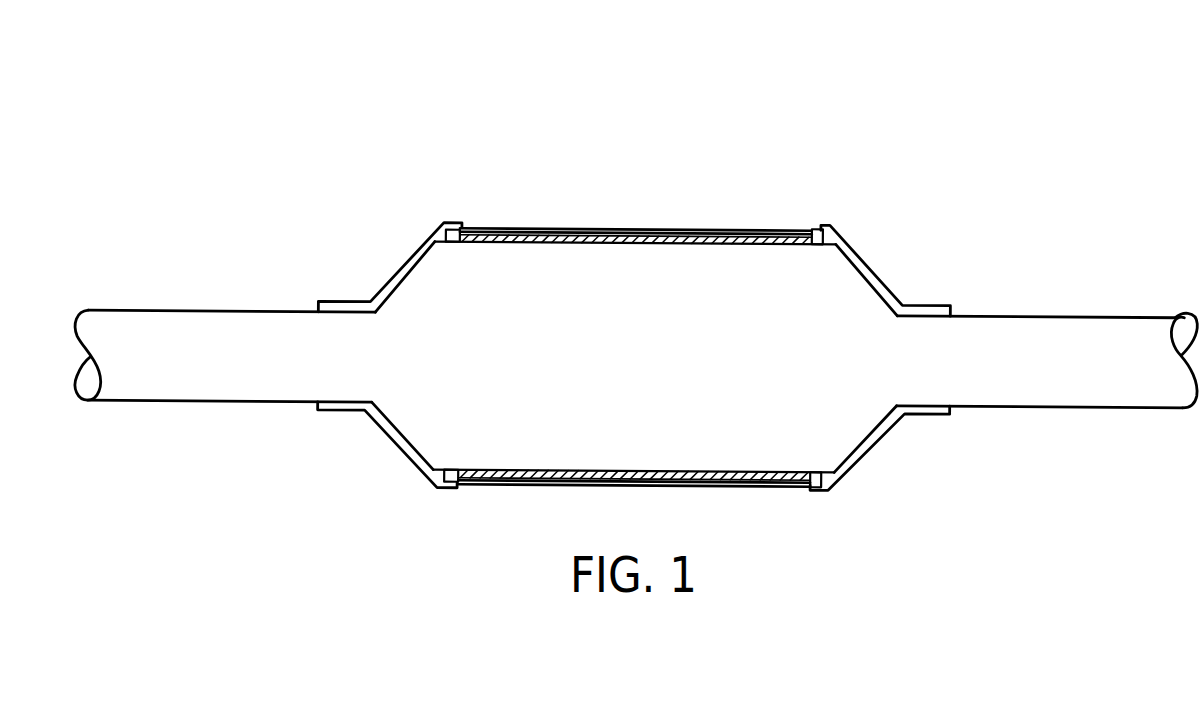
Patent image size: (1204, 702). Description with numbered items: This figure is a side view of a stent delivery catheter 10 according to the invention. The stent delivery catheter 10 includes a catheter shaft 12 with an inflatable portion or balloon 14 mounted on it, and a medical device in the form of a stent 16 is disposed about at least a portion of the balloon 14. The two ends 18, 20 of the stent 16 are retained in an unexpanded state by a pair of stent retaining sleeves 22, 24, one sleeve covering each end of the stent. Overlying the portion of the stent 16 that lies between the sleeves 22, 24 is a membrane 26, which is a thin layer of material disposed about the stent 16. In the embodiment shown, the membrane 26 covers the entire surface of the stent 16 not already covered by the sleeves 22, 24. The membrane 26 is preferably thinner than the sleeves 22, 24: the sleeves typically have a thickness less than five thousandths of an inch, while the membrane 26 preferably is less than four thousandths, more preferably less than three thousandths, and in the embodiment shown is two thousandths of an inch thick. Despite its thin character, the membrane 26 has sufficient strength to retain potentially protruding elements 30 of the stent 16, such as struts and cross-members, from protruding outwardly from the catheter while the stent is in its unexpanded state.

The stent delivery catheter 10 is at (810, 107).
The catheter shaft 12 is at (206, 322).
The balloon 14 is at (740, 233).
The stent 16 is at (660, 230).
The end of stent 18 is at (450, 229).
The end of stent 20 is at (818, 228).
The stent retaining sleeve 22 is at (407, 263).
The stent retaining sleeve 24 is at (870, 263).
The membrane 26 is at (590, 232).
The protruding elements 30 is at (540, 235).